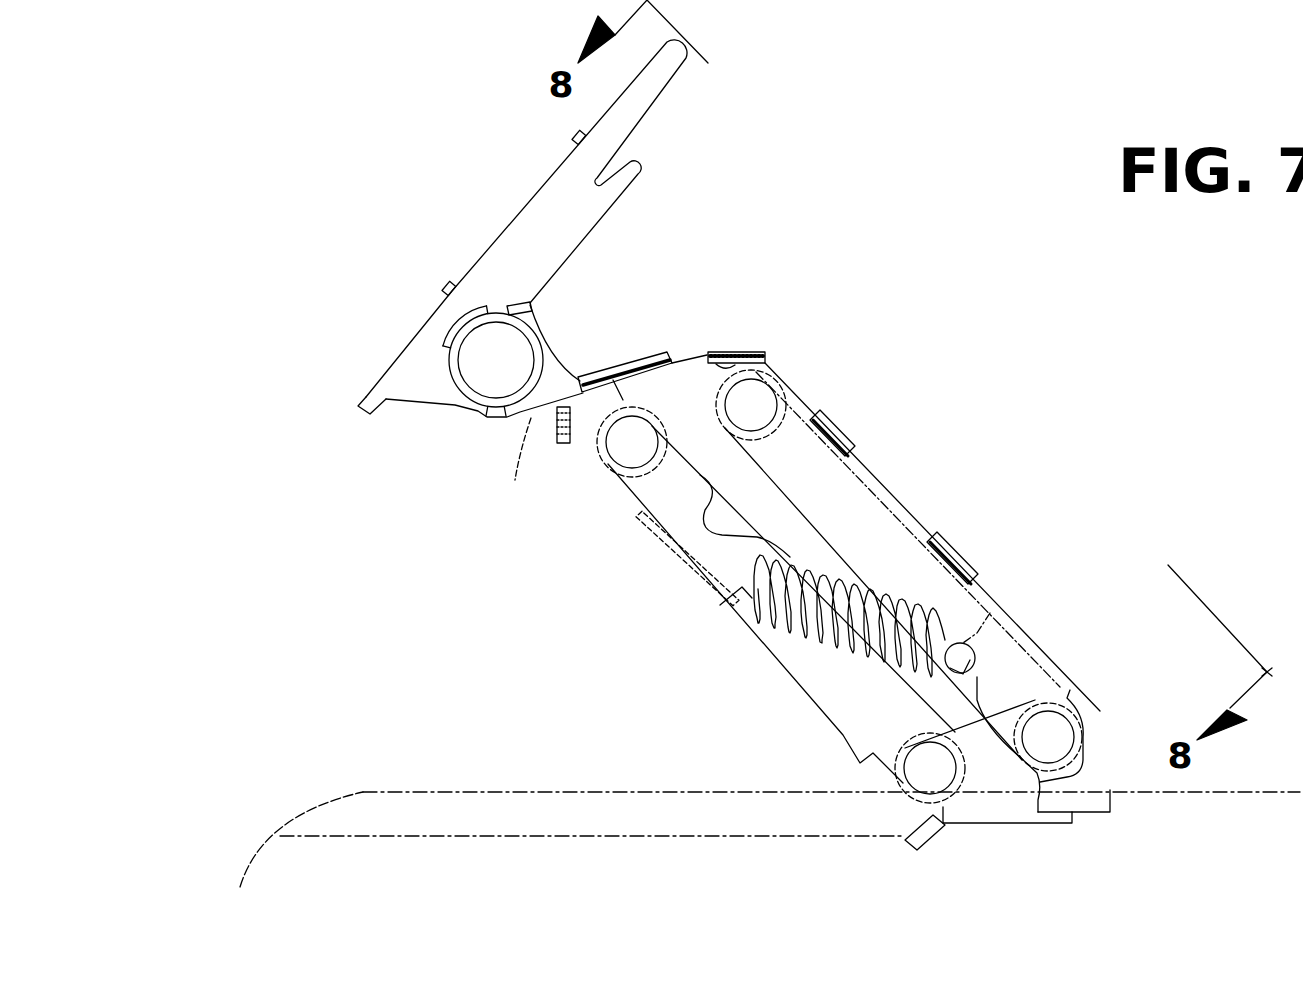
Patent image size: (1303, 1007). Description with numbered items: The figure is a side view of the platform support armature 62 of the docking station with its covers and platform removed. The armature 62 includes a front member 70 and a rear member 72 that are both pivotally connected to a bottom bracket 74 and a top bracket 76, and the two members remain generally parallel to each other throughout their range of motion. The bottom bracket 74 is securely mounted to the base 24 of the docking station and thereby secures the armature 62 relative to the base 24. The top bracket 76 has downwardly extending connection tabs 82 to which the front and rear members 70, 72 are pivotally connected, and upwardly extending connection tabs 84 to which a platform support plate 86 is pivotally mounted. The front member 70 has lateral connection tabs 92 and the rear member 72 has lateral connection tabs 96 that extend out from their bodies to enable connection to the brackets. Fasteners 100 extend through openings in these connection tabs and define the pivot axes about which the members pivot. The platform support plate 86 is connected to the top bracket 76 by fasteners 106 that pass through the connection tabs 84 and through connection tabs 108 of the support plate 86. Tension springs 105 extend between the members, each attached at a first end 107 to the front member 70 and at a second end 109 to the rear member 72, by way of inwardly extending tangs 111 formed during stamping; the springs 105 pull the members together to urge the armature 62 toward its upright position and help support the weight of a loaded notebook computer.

The base 24 is at (367, 780).
The platform support armature 62 is at (912, 527).
The front member 70 is at (781, 604).
The rear member 72 is at (930, 518).
The bottom bracket 74 is at (983, 812).
The top bracket 76 is at (596, 348).
The connection tabs 82 is at (686, 378).
The connection tabs 84 is at (530, 420).
The platform support plate 86 is at (463, 250).
The lateral connection tabs 92 is at (797, 667).
The lateral connection tabs 96 is at (868, 494).
The fasteners 100 is at (752, 404).
The tension springs 105 is at (822, 600).
The fasteners 106 is at (490, 372).
The first end 107 is at (736, 548).
The connection tabs 108 is at (578, 215).
The second end 109 is at (990, 660).
The tangs 111 is at (744, 630).